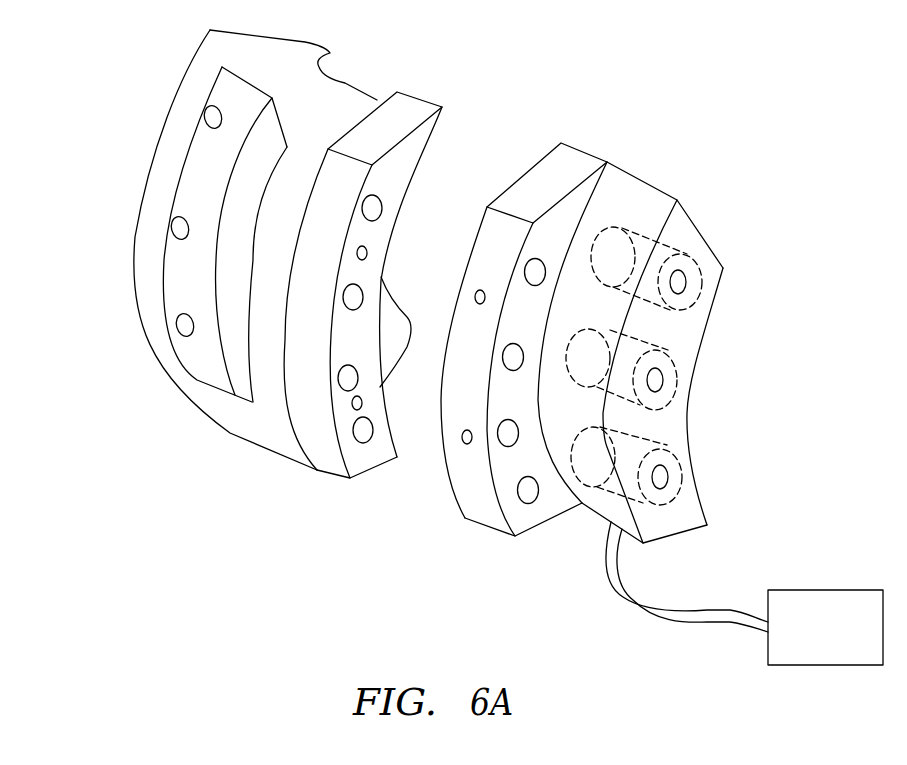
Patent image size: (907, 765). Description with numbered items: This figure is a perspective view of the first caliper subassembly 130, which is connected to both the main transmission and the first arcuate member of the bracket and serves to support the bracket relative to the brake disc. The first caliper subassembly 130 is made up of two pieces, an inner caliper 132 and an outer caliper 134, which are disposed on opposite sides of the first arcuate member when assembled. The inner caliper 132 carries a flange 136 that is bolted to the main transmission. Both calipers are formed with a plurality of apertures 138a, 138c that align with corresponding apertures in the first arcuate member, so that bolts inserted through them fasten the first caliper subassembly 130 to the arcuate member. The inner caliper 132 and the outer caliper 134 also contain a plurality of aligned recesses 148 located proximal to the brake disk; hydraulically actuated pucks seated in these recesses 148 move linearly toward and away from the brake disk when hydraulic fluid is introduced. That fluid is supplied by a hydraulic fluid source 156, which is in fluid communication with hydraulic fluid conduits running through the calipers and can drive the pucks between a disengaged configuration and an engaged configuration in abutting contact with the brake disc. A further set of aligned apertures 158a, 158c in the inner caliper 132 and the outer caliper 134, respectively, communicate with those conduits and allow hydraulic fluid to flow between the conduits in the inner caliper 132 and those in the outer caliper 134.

The first caliper subassembly 130 is at (214, 498).
The inner caliper 132 is at (297, 460).
The outer caliper 134 is at (465, 518).
The flange 136 is at (183, 256).
The apertures 138a is at (368, 438).
The apertures 138c is at (531, 497).
The recesses 148 is at (682, 300).
The hydraulic fluid source 156 is at (853, 589).
The apertures 158a is at (367, 255).
The apertures 158c is at (480, 288).